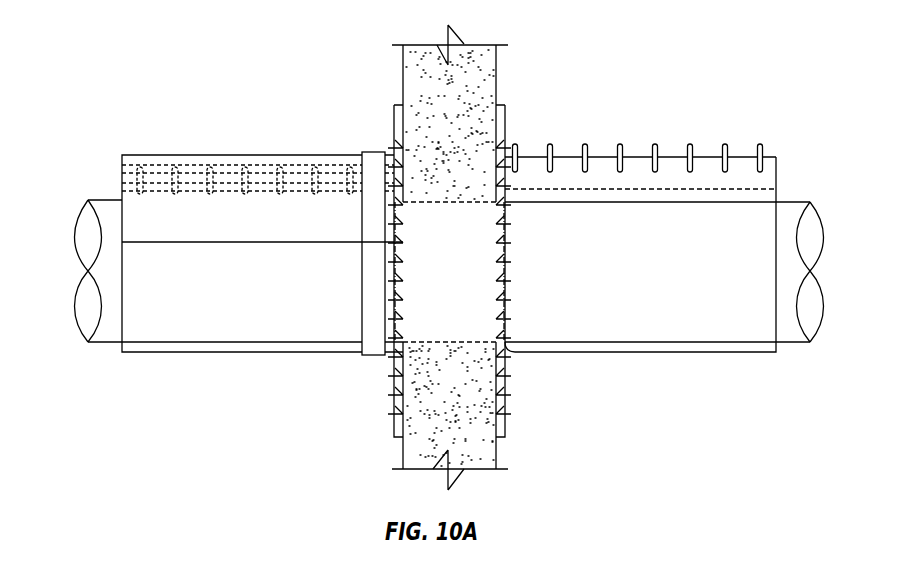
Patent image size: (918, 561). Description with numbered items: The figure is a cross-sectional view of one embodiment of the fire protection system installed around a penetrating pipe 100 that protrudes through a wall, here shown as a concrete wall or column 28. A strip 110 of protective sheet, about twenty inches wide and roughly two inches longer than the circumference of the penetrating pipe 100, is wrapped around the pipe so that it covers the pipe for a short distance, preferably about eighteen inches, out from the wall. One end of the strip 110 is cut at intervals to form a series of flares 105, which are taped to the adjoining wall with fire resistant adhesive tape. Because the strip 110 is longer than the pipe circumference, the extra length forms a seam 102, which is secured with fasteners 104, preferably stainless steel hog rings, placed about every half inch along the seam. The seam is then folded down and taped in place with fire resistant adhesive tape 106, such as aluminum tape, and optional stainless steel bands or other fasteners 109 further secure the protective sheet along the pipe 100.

The concrete column 28 is at (490, 458).
The penetrating pipe 100 is at (88, 315).
The seam 102 is at (192, 172).
The fasteners 104 is at (140, 172).
The flares 105 is at (505, 415).
The fire resistant adhesive tape 106 is at (272, 153).
The fasteners 109 is at (380, 357).
The strip 110 is at (655, 343).